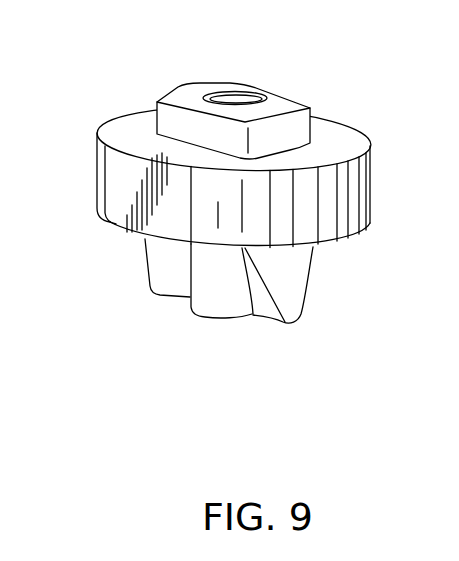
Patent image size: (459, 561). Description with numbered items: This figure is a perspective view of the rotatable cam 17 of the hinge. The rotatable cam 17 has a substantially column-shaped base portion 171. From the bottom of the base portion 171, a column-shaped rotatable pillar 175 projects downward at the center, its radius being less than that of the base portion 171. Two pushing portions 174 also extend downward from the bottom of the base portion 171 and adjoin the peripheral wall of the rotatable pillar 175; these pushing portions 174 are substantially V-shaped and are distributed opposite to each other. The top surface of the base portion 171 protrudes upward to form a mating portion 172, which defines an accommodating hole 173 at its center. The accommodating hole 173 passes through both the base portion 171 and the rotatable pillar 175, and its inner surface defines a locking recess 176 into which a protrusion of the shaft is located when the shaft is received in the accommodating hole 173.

The rotatable cam 17 is at (243, 192).
The base portion 171 is at (347, 201).
The mating portion 172 is at (303, 110).
The accommodating hole 173 is at (236, 98).
The pushing portions 174 is at (293, 292).
The rotatable pillar 175 is at (228, 308).
The locking recess 176 is at (205, 96).